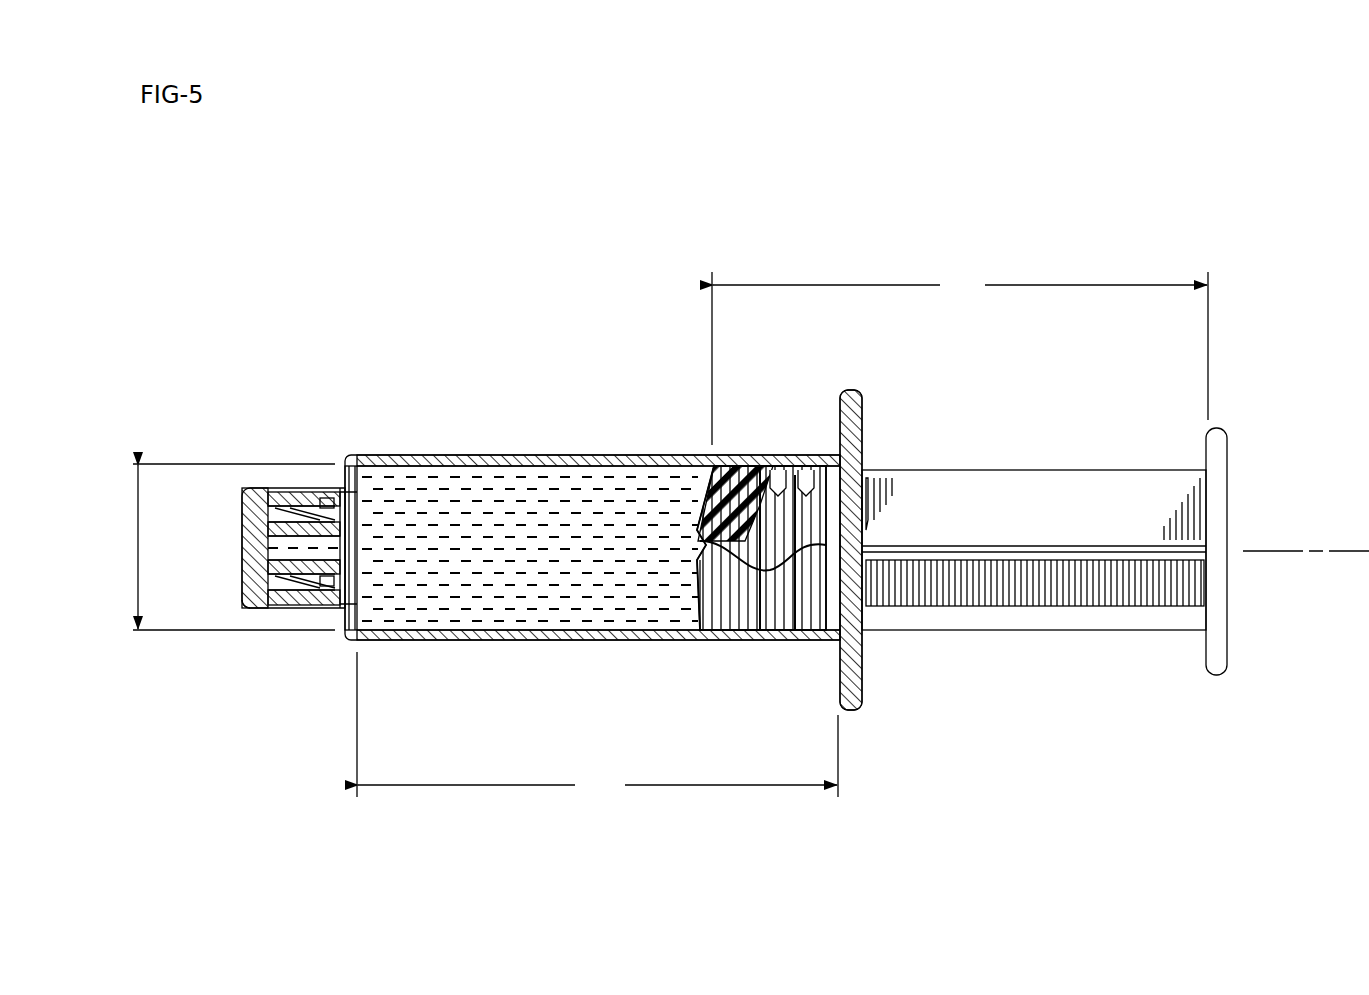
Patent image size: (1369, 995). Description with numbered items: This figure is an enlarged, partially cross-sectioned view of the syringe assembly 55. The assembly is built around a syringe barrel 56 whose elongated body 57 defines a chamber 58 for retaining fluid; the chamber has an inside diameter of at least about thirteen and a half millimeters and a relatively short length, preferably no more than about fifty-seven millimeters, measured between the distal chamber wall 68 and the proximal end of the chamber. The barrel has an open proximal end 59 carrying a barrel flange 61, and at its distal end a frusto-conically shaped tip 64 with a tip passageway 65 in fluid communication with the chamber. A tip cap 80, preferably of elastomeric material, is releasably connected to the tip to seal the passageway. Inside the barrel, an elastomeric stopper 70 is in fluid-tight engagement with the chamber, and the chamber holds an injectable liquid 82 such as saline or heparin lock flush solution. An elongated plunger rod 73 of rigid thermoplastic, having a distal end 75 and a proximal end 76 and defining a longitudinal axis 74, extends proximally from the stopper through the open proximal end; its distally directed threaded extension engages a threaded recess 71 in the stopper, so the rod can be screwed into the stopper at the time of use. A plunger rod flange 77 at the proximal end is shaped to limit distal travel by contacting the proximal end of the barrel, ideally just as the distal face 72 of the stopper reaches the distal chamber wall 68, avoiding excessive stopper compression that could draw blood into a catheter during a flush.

The syringe assembly 55 is at (622, 272).
The syringe barrel 56 is at (415, 643).
The elongated body 57 is at (548, 643).
The chamber 58 is at (588, 495).
The open proximal end 59 is at (862, 672).
The barrel flange 61 is at (865, 416).
The frusto-conically shaped tip 64 is at (253, 488).
The tip passageway 65 is at (362, 545).
The distal chamber wall 68 is at (365, 498).
The stopper 70 is at (742, 642).
The threaded recess 71 is at (778, 488).
The distal face 72 is at (676, 640).
The plunger rod 73 is at (985, 598).
The longitudinal axis 74 is at (802, 480).
The distal end 75 is at (838, 495).
The proximal end 76 is at (1160, 632).
The plunger rod flange 77 is at (1213, 677).
The tip cap 80 is at (246, 600).
The injectable liquid 82 is at (488, 642).